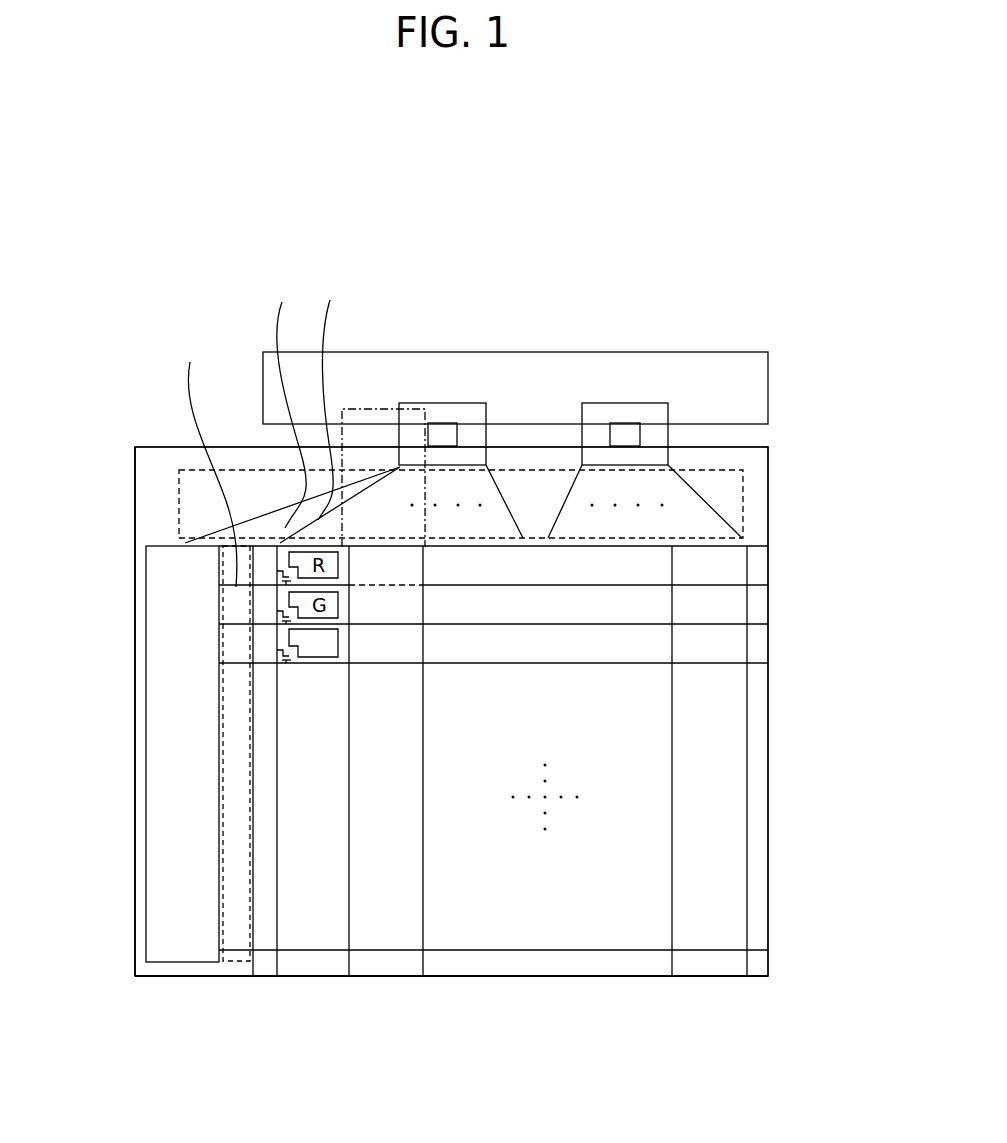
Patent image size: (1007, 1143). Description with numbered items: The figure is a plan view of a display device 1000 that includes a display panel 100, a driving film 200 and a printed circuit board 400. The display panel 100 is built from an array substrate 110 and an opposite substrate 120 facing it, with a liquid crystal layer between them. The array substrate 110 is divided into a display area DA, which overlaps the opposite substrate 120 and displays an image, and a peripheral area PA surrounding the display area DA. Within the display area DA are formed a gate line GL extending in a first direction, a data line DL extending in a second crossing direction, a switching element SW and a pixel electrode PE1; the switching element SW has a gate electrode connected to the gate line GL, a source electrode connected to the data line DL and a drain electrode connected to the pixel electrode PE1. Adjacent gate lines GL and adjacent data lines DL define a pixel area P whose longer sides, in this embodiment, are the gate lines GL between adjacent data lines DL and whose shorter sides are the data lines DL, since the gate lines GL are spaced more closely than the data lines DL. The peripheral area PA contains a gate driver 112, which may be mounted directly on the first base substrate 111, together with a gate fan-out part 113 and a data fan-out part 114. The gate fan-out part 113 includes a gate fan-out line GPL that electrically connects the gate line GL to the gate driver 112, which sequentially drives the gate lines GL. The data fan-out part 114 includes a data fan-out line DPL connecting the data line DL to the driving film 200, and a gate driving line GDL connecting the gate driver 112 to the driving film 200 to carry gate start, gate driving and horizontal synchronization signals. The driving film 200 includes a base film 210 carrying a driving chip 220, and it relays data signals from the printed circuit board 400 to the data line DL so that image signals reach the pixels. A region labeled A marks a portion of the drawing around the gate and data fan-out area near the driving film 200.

The display device 1000 is at (331, 195).
The display panel 100 is at (327, 1058).
The array substrate 110 is at (197, 986).
The opposite substrate 120 is at (316, 986).
The first base substrate 111 is at (135, 613).
The gate driver 112 is at (146, 691).
The gate fan-out part 113 is at (223, 826).
The data fan-out part 114 is at (744, 503).
The driving film 200 is at (533, 350).
The base film 210 is at (445, 403).
The driving chip 220 is at (450, 423).
The printed circuit board 400 is at (683, 351).
The peripheral area PA is at (150, 469).
The display area DA is at (740, 926).
The region A is at (377, 409).
The gate fan-out line GPL is at (208, 462).
The gate driving line GDL is at (288, 404).
The data fan-out line DPL is at (333, 399).
The gate line GL is at (280, 612).
The data line DL is at (279, 758).
The pixel area P is at (386, 761).
The pixel electrode PE1 is at (339, 648).
The switching element SW is at (290, 658).